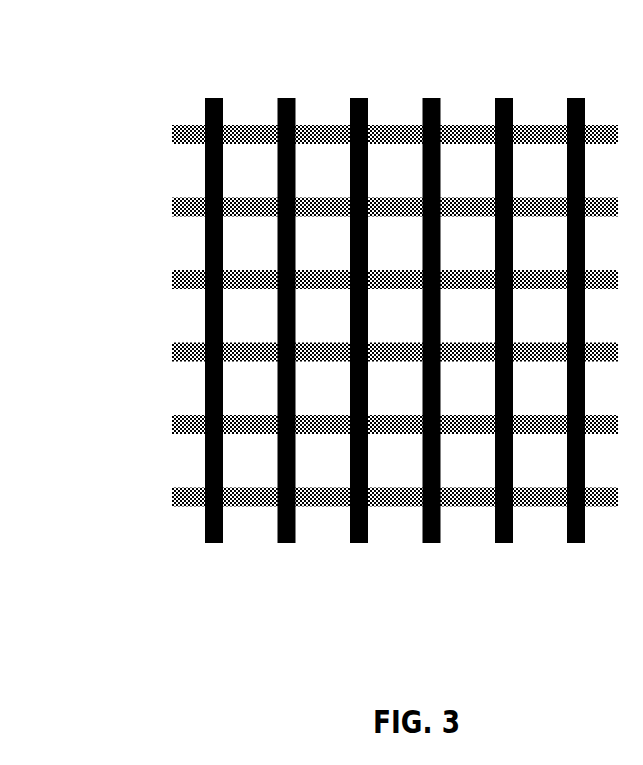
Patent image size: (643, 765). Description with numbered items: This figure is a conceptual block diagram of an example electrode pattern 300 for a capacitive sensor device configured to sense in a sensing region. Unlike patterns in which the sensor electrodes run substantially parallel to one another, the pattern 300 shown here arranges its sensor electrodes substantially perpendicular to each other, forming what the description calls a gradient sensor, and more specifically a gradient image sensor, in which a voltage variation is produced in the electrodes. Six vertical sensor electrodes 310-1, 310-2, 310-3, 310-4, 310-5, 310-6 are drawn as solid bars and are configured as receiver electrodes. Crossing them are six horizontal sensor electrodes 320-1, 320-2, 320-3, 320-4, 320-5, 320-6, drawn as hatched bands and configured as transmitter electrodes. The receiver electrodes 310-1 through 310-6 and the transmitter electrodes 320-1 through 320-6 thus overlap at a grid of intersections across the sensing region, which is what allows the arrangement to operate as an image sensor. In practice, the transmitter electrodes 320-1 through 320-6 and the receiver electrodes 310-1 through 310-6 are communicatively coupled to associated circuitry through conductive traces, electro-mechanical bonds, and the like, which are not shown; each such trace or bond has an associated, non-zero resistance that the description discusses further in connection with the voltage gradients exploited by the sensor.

The memory array 300 is at (194, 42).
The sensor electrode 310-1 is at (214, 543).
The sensor electrode 310-2 is at (286, 543).
The sensor electrode 310-3 is at (359, 543).
The sensor electrode 310-4 is at (432, 543).
The sensor electrode 310-5 is at (504, 543).
The sensor electrode 310-6 is at (576, 543).
The sensor electrode 320-1 is at (172, 140).
The sensor electrode 320-2 is at (172, 212).
The sensor electrode 320-3 is at (172, 285).
The sensor electrode 320-4 is at (172, 358).
The sensor electrode 320-5 is at (172, 430).
The sensor electrode 320-6 is at (172, 502).